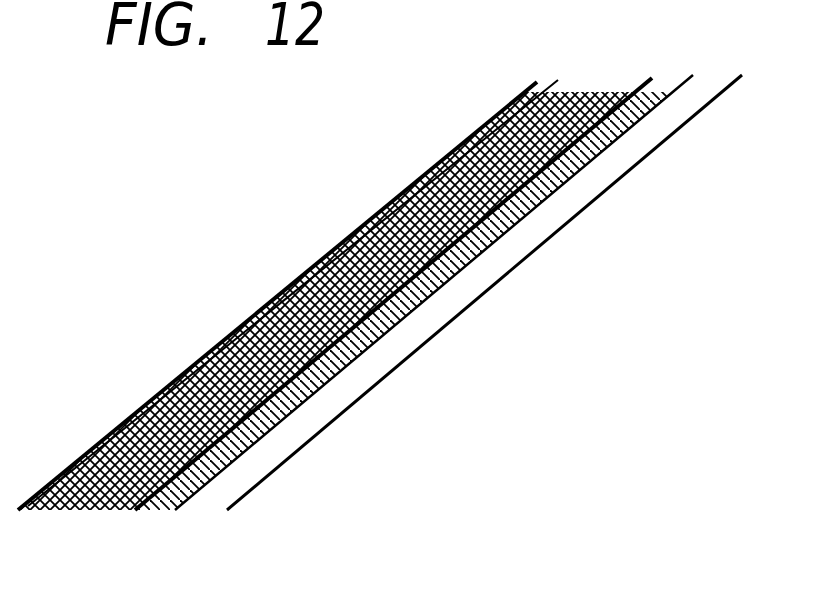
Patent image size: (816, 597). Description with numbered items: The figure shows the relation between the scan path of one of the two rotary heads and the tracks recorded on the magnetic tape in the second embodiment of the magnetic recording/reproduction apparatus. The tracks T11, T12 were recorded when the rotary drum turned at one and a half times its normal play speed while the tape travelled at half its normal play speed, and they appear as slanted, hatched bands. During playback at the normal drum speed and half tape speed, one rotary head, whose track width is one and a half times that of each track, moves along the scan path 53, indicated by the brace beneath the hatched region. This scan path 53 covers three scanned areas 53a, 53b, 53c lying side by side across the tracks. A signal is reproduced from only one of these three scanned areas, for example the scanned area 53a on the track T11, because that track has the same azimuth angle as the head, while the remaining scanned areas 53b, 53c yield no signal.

The scan path 53 is at (380, 323).
The scanned area 53a is at (202, 362).
The scanned area 53b is at (477, 132).
The scanned area 53c is at (475, 255).
The track T11 is at (652, 68).
The track T12 is at (745, 68).